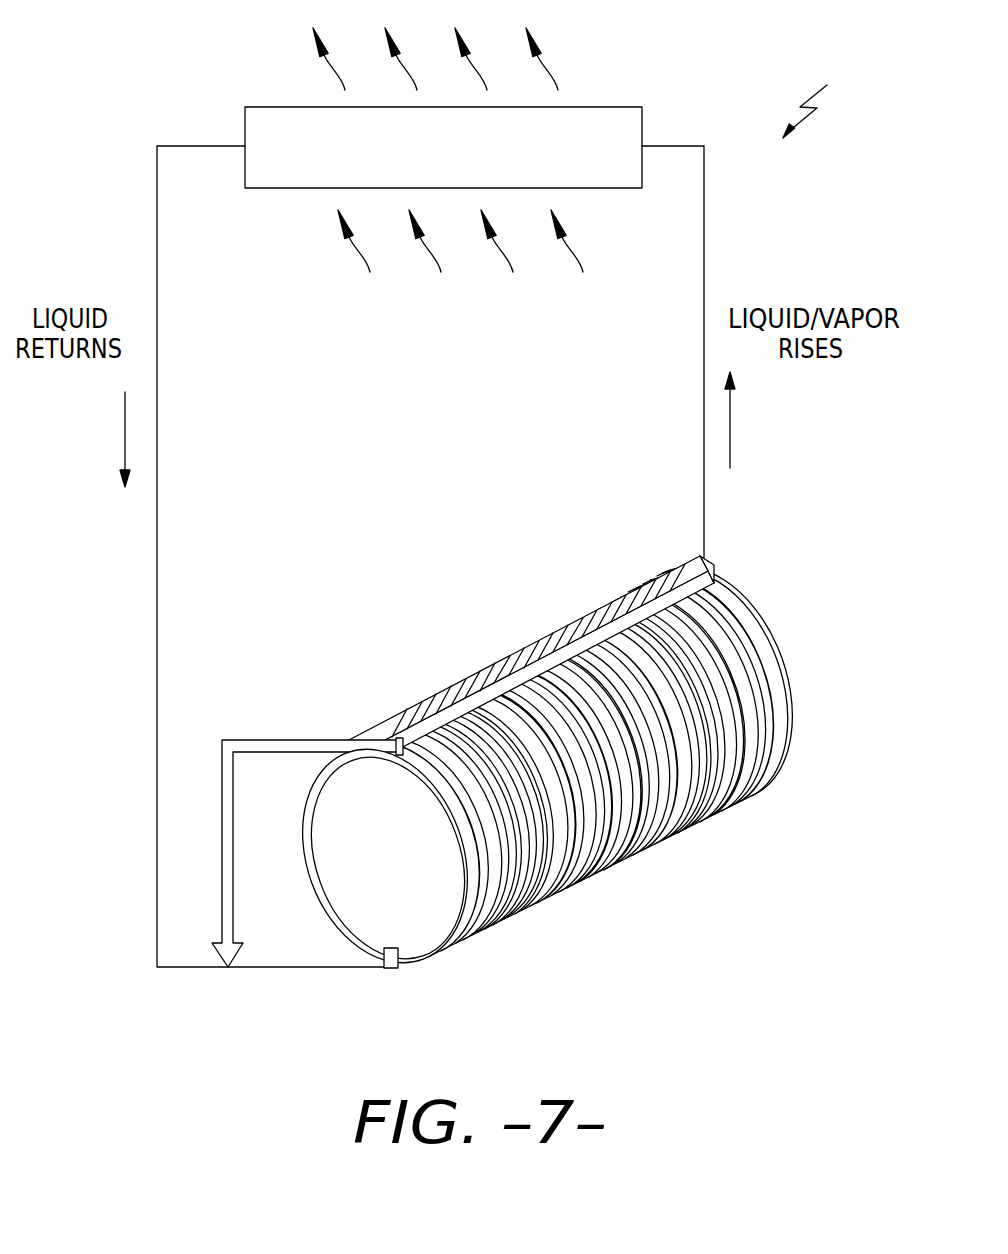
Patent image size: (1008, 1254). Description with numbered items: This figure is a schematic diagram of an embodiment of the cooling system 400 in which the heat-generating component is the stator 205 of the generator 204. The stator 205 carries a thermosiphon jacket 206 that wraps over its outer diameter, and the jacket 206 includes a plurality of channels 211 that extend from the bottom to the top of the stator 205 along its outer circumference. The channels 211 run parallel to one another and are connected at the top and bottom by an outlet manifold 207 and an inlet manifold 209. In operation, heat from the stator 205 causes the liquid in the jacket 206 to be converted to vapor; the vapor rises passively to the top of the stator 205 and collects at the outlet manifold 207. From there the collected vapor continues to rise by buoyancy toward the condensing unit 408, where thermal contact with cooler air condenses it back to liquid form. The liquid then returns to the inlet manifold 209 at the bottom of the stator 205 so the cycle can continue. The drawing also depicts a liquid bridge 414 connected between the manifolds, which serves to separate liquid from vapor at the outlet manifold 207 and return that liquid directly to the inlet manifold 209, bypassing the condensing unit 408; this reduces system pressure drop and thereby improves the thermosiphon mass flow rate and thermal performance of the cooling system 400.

The cooling system 400 is at (829, 94).
The condensing unit 408 is at (610, 106).
The generator 204 is at (462, 622).
The stator 205 is at (428, 905).
The thermosiphon jacket 206 is at (593, 602).
The outlet manifold 207 is at (427, 720).
The inlet manifold 209 is at (382, 950).
The channels 211 is at (642, 780).
The liquid bridge 414 is at (288, 738).